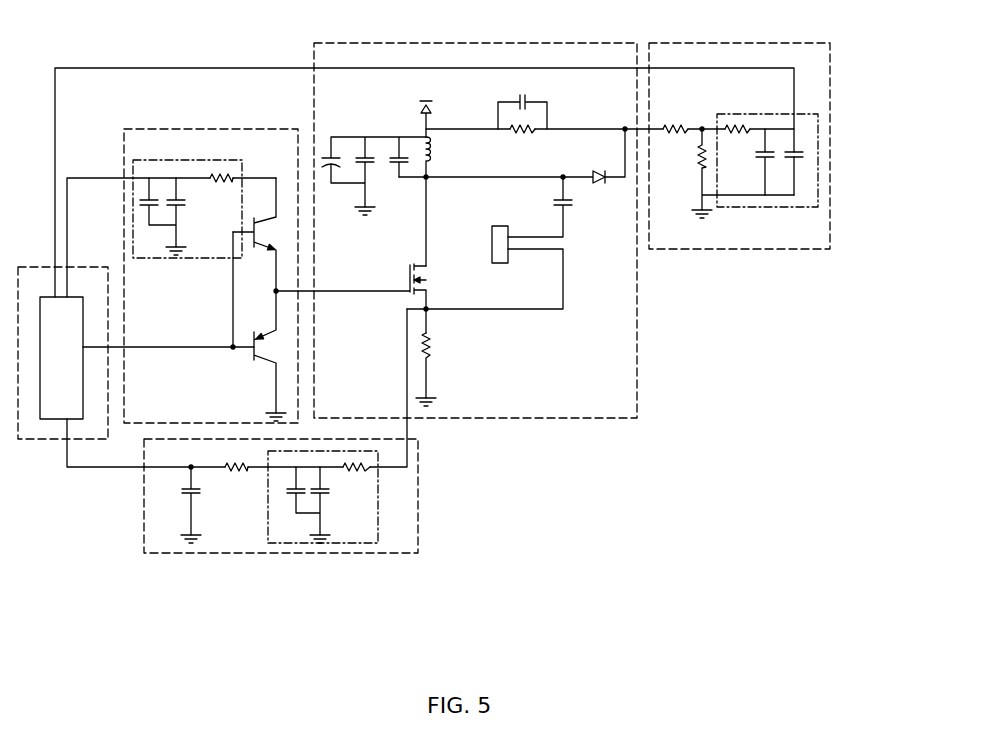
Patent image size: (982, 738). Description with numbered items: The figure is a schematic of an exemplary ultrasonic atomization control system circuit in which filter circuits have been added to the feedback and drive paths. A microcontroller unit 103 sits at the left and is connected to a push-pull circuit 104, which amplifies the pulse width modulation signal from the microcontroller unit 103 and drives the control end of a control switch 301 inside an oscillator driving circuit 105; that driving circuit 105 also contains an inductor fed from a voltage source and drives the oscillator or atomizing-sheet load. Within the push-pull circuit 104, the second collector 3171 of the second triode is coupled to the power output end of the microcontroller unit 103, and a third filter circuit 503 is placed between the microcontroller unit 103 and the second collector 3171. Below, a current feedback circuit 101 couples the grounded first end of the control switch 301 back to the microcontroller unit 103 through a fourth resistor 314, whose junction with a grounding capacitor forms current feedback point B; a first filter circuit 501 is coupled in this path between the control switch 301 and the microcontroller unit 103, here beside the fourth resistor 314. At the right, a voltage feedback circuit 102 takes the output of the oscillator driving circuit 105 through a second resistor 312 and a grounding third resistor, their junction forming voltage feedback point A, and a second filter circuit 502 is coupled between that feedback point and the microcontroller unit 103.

The current feedback circuit 101 is at (306, 530).
The voltage feedback circuit 102 is at (776, 132).
The microcontroller unit 103 is at (22, 267).
The push-pull circuit 104 is at (212, 253).
The oscillator driving circuit 105 is at (469, 216).
The control switch 301 is at (374, 298).
The second resistor 312 is at (674, 118).
The fourth resistor 314 is at (241, 483).
The first filter circuit 501 is at (353, 543).
The second filter circuit 502 is at (808, 114).
The third filter circuit 503 is at (150, 160).
The second collector 3171 is at (277, 207).